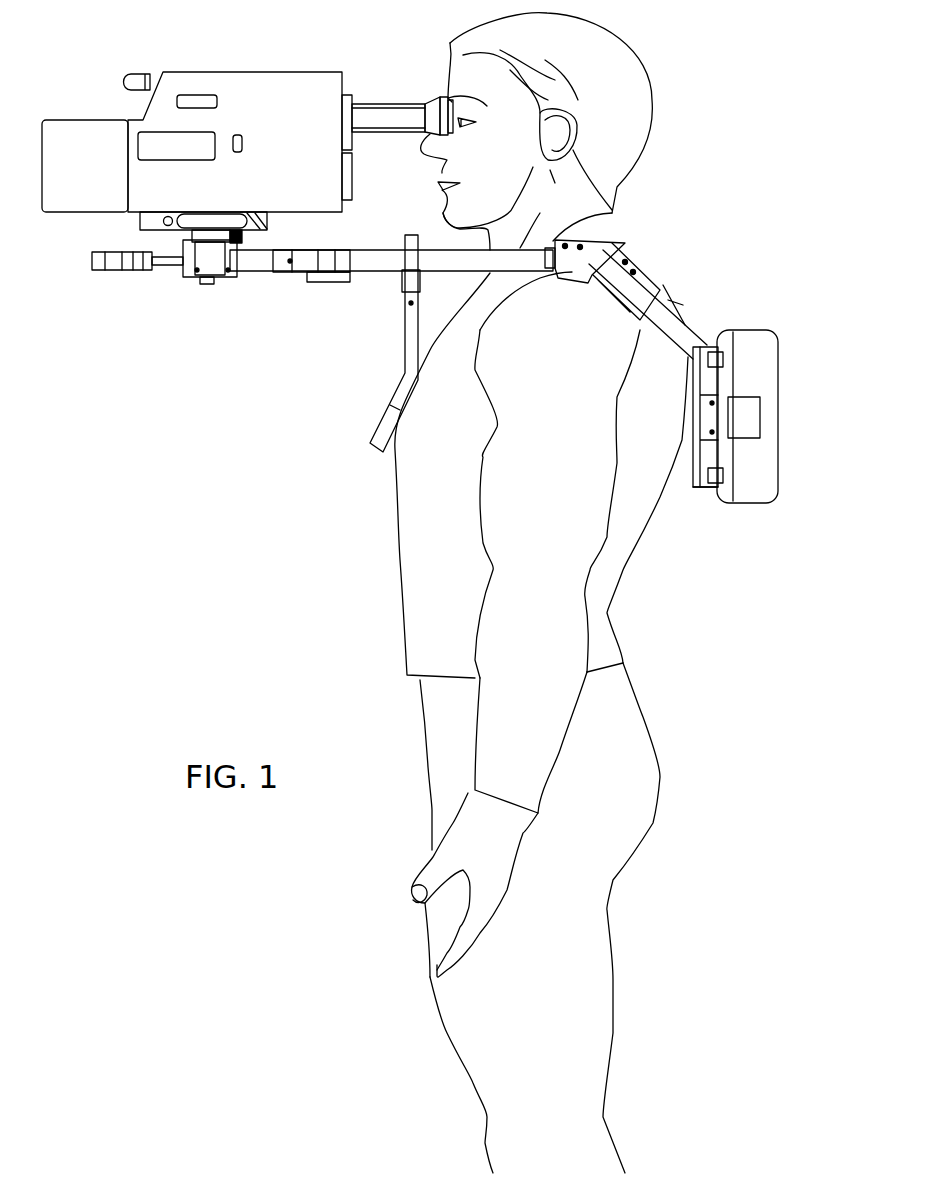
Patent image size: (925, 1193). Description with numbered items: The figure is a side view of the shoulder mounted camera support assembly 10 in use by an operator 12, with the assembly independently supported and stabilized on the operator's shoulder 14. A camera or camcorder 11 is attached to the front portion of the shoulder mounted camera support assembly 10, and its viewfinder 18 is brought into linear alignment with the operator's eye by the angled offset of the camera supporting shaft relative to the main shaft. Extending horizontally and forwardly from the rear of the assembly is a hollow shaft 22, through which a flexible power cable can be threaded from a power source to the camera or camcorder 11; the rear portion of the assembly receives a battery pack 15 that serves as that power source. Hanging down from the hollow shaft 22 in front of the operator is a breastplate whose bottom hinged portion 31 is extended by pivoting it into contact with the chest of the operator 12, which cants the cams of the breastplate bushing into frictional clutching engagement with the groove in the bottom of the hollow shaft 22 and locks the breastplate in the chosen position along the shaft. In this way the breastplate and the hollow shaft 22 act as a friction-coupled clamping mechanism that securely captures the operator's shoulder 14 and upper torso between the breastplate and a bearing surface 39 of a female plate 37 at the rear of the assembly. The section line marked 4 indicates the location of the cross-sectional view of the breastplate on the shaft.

The shoulder mounted camera support assembly 10 is at (290, 334).
The camera or camcorder 11 is at (192, 74).
The operator 12 is at (410, 532).
The operator's shoulder 14 is at (612, 212).
The battery pack 15 is at (723, 333).
The viewfinder 18 is at (377, 104).
The hollow shaft 22 is at (253, 273).
The bottom hinged portion 31 is at (383, 423).
The female plate 37 is at (722, 340).
The bearing surface 39 is at (687, 485).
The section line 4- 4 is at (382, 328).